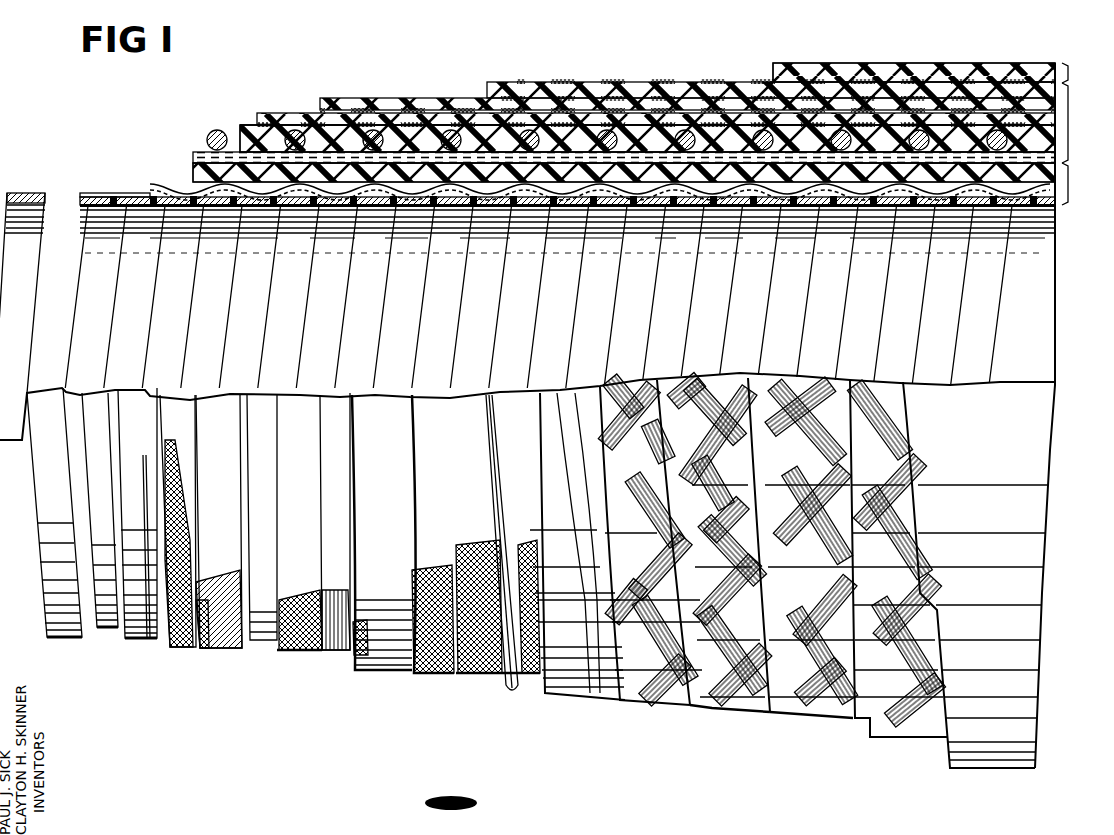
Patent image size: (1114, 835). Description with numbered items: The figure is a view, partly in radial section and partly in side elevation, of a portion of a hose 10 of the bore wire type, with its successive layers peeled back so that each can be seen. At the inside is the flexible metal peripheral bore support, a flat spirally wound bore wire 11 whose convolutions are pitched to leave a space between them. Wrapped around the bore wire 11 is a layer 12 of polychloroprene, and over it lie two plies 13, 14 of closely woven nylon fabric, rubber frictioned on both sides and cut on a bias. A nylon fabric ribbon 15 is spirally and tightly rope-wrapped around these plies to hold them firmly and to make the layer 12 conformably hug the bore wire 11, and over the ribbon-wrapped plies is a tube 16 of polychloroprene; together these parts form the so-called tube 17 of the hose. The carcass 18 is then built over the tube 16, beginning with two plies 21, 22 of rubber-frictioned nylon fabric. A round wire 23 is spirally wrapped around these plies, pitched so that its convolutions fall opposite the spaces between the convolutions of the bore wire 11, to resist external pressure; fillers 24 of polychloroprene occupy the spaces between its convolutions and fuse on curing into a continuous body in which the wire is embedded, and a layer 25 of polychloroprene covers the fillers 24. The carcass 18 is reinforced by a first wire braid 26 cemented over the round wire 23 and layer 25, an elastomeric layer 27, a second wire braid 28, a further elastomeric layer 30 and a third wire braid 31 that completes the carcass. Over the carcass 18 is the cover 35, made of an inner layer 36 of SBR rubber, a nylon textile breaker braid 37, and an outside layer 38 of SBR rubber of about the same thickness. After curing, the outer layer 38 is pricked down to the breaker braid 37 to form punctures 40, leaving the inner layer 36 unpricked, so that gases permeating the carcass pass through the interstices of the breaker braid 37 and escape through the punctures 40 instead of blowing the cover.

The hose 10 is at (306, 104).
The bore wire 11 is at (17, 192).
The layer of elastomeric material 12 is at (135, 196).
The nylon fabric ply 13 is at (300, 190).
The nylon fabric ply 14 is at (320, 185).
The nylon fabric ribbon 15 is at (360, 176).
The tube of elastomeric material 16 is at (432, 165).
The tube 17 is at (1068, 183).
The carcass 18 is at (1068, 125).
The nylon fabric ply 21 is at (630, 160).
The nylon fabric ply 22 is at (710, 170).
The round wire 23 is at (213, 130).
The fillers 24 is at (512, 142).
The layer of elastomeric material 25 is at (385, 125).
The first reinforcing wire braid 26 is at (450, 115).
The layer of elastomeric material 27 is at (515, 110).
The second wire braid 28 is at (570, 100).
The layer of elastomeric material 30 is at (597, 105).
The third wire braid 31 is at (658, 90).
The cover 35 is at (1068, 72).
The layer of rubber 36 is at (700, 88).
The textile breaker braid 37 is at (733, 82).
The outside layer of rubber 38 is at (805, 70).
The punctures 40 is at (838, 70).